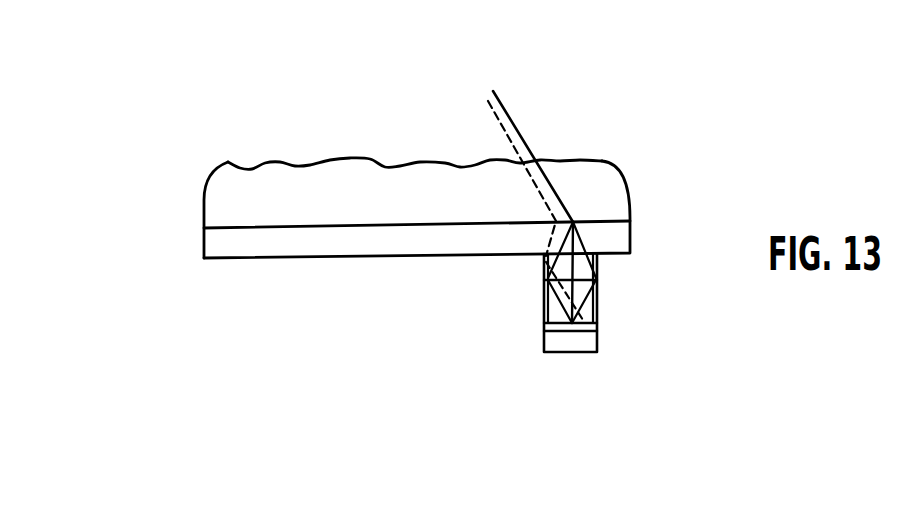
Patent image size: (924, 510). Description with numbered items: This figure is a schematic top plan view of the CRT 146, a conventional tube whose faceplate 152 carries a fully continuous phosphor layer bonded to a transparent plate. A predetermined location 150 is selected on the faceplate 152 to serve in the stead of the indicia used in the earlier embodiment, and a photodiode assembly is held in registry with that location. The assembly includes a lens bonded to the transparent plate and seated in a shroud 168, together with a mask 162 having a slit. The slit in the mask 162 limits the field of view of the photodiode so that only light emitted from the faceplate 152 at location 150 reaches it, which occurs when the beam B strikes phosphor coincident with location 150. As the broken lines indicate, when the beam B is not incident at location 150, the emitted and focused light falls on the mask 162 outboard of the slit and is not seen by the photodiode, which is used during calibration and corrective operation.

The CRT 146 is at (201, 240).
The predetermined location 150 is at (575, 220).
The faceplate 152 is at (634, 233).
The shroud 168 is at (598, 293).
The mask 162 is at (598, 322).
The beam B is at (530, 141).